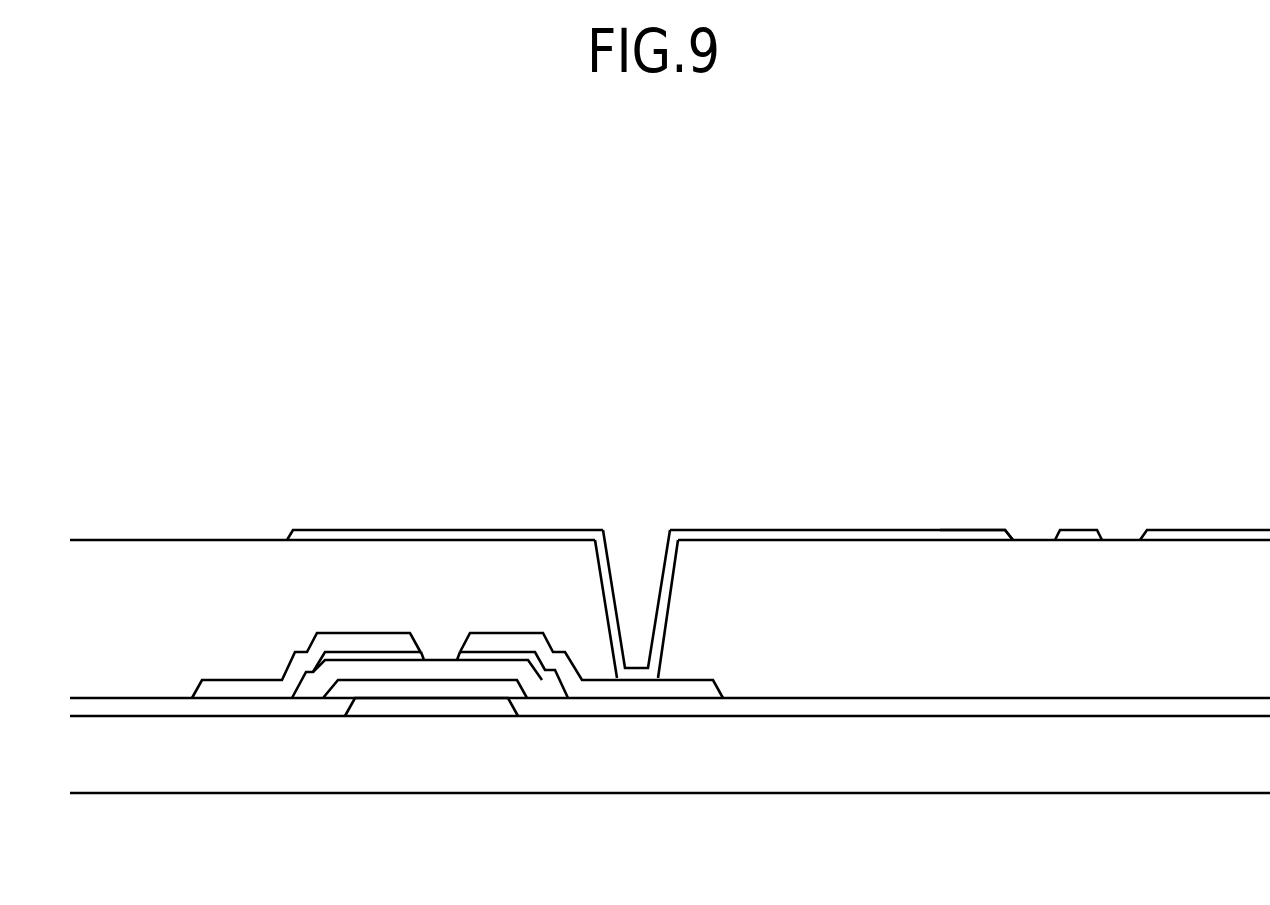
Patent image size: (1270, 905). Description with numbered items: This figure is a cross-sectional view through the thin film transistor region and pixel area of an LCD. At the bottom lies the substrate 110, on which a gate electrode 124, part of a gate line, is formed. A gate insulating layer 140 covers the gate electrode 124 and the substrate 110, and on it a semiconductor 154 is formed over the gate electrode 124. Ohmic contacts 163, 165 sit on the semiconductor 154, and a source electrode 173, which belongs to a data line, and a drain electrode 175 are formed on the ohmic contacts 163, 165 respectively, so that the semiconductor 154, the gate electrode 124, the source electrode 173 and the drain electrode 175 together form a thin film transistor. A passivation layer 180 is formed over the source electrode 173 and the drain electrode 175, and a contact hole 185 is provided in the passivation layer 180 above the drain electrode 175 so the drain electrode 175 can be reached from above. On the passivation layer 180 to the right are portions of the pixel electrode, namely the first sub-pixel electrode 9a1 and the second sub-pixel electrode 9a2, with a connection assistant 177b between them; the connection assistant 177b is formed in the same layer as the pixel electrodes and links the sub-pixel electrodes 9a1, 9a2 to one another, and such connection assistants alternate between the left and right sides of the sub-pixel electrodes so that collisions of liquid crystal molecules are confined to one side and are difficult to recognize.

The substrate 110 is at (797, 766).
The gate electrode 124 is at (395, 710).
The gate insulating layer 140 is at (940, 705).
The semiconductor 154 is at (449, 673).
The ohmic contact 163 is at (367, 688).
The ohmic contact 165 is at (543, 673).
The source electrode 173 is at (235, 692).
The drain electrode 175 is at (660, 688).
The passivation layer 180 is at (190, 585).
The contact hole 185 is at (606, 582).
The first sub-pixel electrode 9a1 is at (985, 533).
The right connection assistant 177b is at (1075, 533).
The second sub-pixel electrode 9a2 is at (1183, 533).